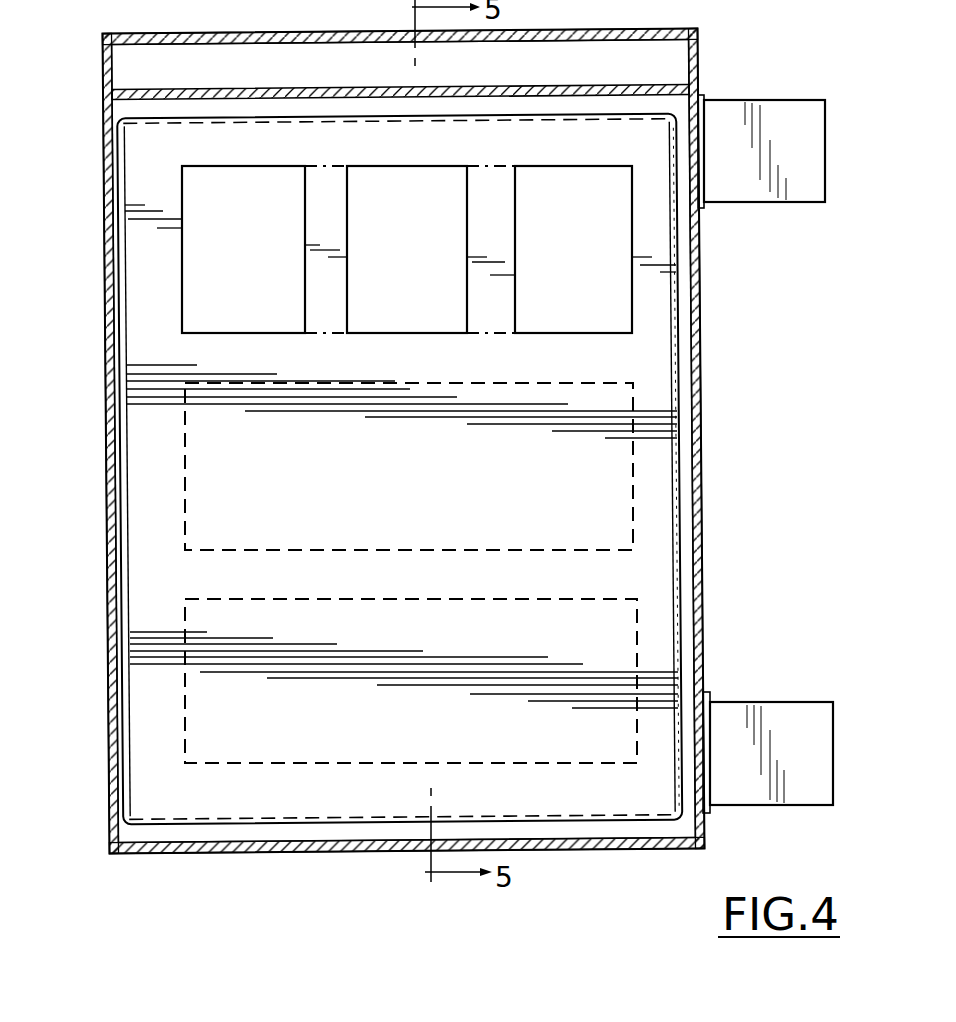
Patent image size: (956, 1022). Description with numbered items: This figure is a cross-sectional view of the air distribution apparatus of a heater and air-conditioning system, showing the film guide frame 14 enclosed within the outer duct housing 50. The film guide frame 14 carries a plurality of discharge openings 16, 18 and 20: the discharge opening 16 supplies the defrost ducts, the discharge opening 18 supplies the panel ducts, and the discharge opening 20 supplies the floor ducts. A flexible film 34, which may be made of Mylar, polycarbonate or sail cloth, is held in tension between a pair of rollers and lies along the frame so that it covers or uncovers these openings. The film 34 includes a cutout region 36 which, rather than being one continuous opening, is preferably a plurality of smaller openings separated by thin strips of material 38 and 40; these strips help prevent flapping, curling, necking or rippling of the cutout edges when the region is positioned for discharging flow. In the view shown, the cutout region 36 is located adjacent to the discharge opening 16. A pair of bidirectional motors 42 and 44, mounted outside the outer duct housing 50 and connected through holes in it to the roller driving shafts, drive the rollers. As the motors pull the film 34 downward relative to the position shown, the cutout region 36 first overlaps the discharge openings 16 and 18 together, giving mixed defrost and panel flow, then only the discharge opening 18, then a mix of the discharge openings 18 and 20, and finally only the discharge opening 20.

The film guide frame 14 is at (697, 369).
The discharge opening 16 is at (197, 241).
The discharge opening 18 is at (187, 448).
The discharge opening 20 is at (190, 676).
The flexible film material 34 is at (137, 562).
The cutout region 36 is at (172, 194).
The thin strip of material 38 is at (315, 278).
The thin strip of material 40 is at (503, 268).
The bidirectional motor 42 is at (826, 135).
The bidirectional motor 44 is at (807, 708).
The outer duct housing 50 is at (106, 59).